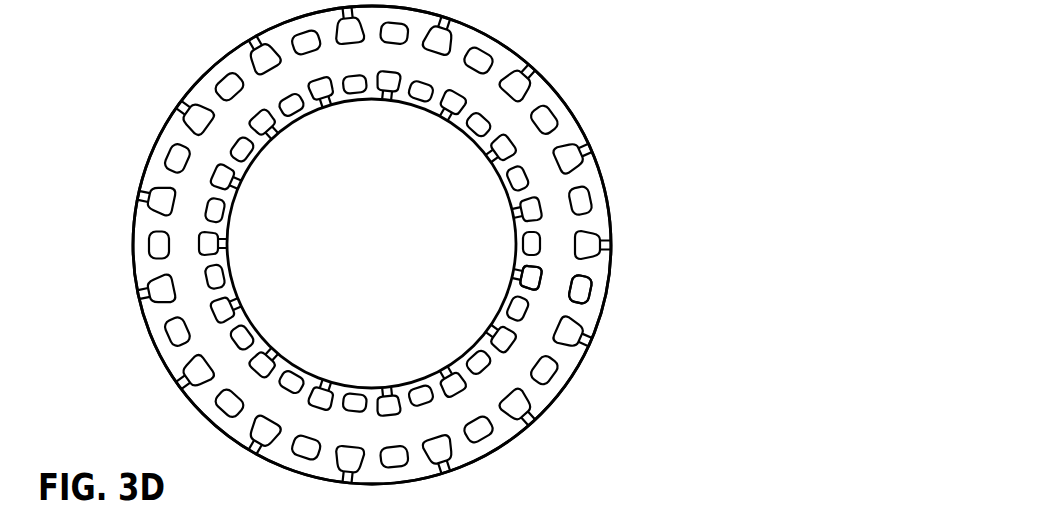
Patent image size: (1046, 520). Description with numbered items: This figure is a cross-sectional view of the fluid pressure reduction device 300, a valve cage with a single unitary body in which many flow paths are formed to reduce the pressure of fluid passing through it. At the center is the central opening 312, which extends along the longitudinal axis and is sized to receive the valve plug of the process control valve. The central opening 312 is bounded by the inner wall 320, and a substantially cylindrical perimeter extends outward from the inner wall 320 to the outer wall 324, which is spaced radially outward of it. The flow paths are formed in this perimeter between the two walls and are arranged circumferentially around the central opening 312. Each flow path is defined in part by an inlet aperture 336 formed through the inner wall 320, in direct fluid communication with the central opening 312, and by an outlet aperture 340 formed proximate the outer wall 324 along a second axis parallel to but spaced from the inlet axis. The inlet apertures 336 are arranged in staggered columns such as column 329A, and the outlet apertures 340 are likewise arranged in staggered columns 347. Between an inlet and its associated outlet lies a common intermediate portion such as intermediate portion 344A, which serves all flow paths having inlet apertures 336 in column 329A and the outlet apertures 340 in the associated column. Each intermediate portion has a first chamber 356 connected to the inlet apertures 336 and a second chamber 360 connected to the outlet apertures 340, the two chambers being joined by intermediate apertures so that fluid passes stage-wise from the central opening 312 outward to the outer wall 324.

The fluid pressure reduction device 300 is at (596, 93).
The central opening 312 is at (374, 236).
The inner wall 320 is at (415, 107).
The outer wall 324 is at (513, 52).
The column of inlet apertures 329A is at (515, 273).
The inlet aperture 336 is at (513, 211).
The outlet aperture 340 is at (591, 149).
The intermediate portion 344A is at (541, 284).
The column of outlet apertures 347 is at (548, 436).
The first chamber 356 is at (543, 268).
The second chamber 360 is at (593, 286).